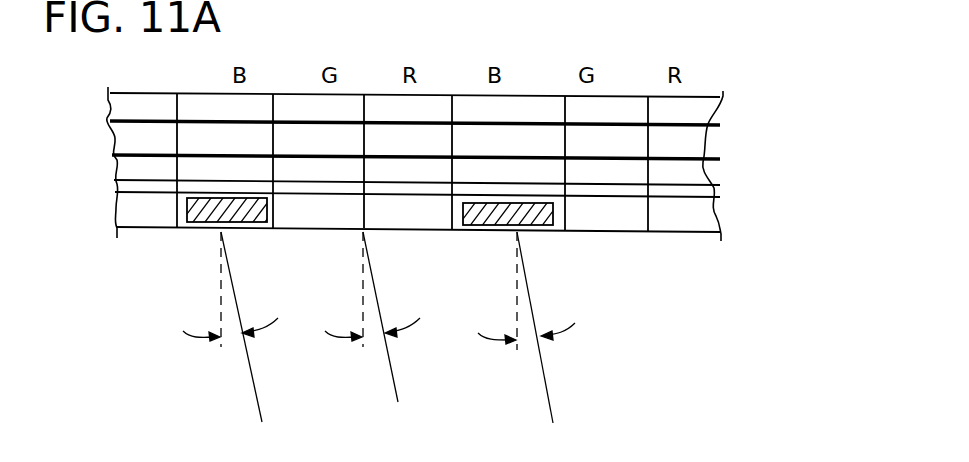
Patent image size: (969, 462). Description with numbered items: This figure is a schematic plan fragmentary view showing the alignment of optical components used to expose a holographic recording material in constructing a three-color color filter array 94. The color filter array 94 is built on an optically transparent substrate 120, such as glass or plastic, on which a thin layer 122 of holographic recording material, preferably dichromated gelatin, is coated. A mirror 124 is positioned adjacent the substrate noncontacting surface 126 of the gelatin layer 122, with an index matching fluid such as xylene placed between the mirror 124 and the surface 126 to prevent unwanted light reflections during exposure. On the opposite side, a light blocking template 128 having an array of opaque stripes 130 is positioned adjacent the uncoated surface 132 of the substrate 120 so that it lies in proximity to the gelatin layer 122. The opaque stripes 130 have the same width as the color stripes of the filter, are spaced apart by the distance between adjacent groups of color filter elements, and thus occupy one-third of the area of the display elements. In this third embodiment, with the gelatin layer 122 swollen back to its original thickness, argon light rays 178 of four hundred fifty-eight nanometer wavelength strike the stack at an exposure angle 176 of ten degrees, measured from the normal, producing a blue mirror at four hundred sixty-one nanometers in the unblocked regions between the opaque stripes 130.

The color filter array 94 is at (77, 173).
The optically transparent substrate 120 is at (707, 175).
The layer of holographic recording material 122 is at (707, 150).
The mirror 124 is at (720, 113).
The substrate noncontacting surface 126 is at (137, 120).
The light blocking template 128 is at (718, 220).
The opaque stripes 130 is at (246, 222).
The uncoated surface 132 is at (138, 181).
The exposure angle 176 is at (230, 335).
The argon light rays 178 is at (257, 393).